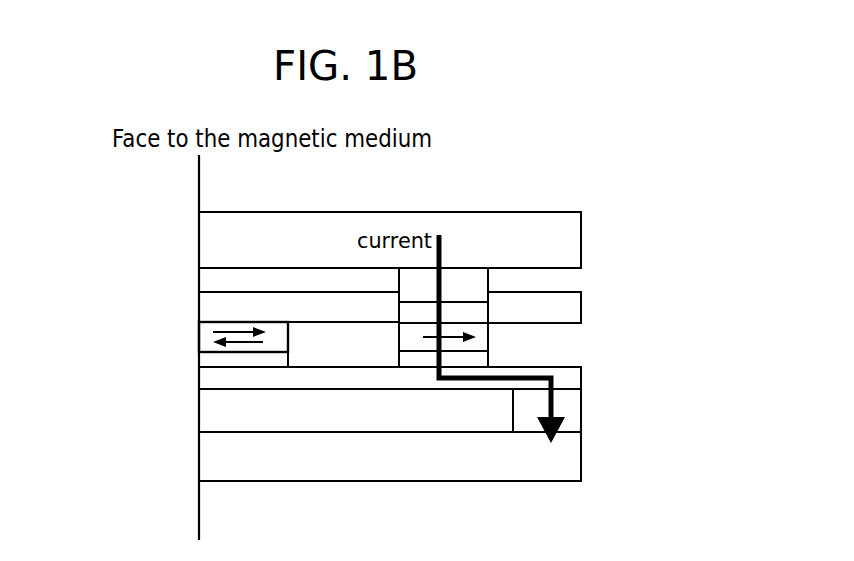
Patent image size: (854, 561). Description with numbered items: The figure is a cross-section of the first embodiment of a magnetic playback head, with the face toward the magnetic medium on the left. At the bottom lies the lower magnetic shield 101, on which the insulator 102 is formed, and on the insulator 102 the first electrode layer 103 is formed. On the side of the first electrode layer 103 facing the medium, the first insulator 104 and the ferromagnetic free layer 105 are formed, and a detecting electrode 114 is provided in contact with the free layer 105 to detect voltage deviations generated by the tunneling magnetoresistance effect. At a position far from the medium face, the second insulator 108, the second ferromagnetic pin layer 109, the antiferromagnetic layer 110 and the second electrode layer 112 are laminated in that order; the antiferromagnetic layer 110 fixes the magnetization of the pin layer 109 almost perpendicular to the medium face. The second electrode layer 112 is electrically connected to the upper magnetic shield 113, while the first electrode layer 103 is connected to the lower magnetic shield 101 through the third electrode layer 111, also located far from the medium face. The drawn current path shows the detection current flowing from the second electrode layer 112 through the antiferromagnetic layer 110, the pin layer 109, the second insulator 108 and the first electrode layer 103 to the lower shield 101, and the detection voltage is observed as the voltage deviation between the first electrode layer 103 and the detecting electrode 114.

The lower magnetic shield 101 is at (535, 461).
The insulator 102 is at (418, 418).
The first electrode layer 103 is at (223, 380).
The first insulator 104 is at (210, 359).
The ferromagnetic layer (free layer) 105 is at (213, 331).
The second insulator 108 is at (488, 362).
The second ferromagnetic layer (pin layer) 109 is at (473, 339).
The antiferromagnetic layer 110 is at (463, 315).
The third electrode layer 111 is at (583, 413).
The second electrode layer 112 is at (488, 278).
The upper magnetic shield 113 is at (520, 234).
The detecting electrode 114 is at (213, 310).